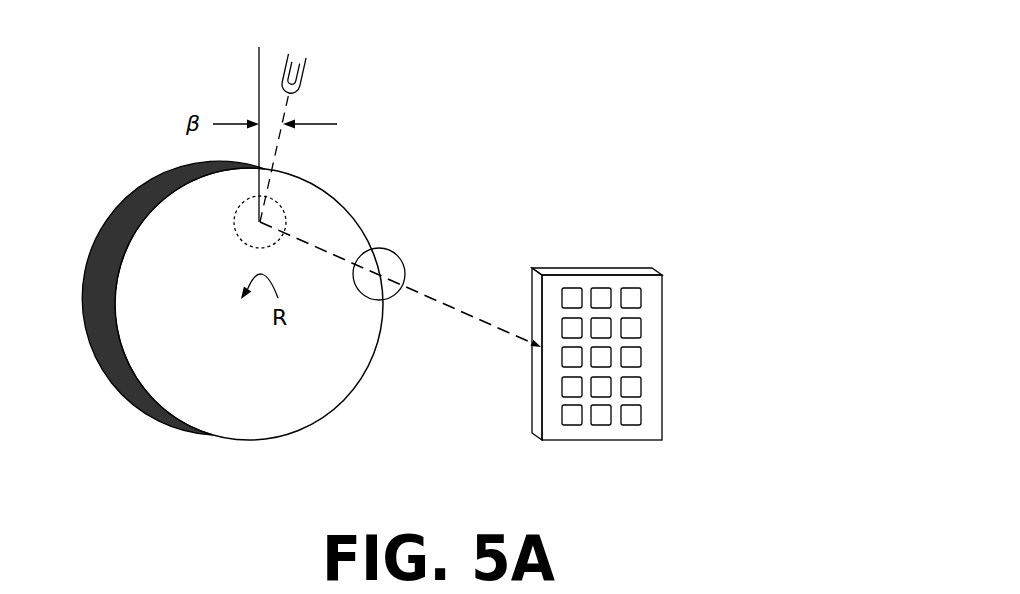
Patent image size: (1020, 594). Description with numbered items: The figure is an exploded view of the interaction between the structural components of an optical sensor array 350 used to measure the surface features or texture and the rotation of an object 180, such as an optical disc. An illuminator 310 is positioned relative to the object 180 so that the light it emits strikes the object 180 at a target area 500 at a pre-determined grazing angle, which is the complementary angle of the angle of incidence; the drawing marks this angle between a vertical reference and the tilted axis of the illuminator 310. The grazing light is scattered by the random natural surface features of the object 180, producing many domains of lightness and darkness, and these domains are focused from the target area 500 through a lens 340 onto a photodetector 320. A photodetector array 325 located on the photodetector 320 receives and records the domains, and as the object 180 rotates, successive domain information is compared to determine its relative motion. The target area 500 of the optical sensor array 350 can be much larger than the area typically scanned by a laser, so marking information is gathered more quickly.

The object 180 is at (192, 397).
The illuminator 310 is at (310, 72).
The photodetector 320 is at (661, 390).
The photodetector array 325 is at (690, 337).
The lens 340 is at (400, 290).
The optical sensor array 350 is at (585, 103).
The target area 500 is at (279, 203).